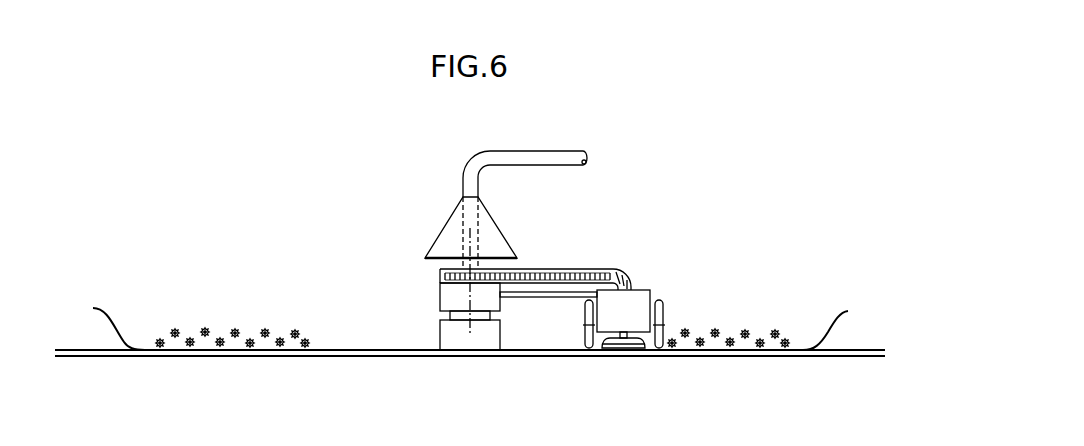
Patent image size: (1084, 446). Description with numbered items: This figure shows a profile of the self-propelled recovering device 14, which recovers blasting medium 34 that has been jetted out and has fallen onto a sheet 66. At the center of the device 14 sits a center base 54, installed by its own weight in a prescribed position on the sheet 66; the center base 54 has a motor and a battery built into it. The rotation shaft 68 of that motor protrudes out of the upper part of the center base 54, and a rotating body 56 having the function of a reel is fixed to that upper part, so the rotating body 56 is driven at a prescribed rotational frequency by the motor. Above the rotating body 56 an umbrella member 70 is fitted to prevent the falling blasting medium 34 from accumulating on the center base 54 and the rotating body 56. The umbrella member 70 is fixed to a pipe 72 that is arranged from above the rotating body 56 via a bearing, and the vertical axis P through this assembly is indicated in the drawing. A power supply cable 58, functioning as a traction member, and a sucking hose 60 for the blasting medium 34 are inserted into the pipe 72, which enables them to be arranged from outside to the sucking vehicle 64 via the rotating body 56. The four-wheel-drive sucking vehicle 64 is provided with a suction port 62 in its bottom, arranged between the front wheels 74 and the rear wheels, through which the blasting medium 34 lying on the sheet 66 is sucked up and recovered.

The self-propelled recovering device 14 is at (641, 236).
The blasting medium 34 is at (217, 330).
The center base 54 is at (477, 338).
The rotating body 56 is at (447, 297).
The power supply cable 58 is at (538, 297).
The sucking hose 60 is at (555, 269).
The suction port 62 is at (623, 347).
The sucking vehicle 64 is at (642, 286).
The sheet 66 is at (795, 350).
The rotation shaft 68 is at (455, 333).
The umbrella member 70 is at (443, 225).
The pipe 72 is at (537, 151).
The front wheels 74 is at (580, 338).
The rotation axis P is at (473, 238).